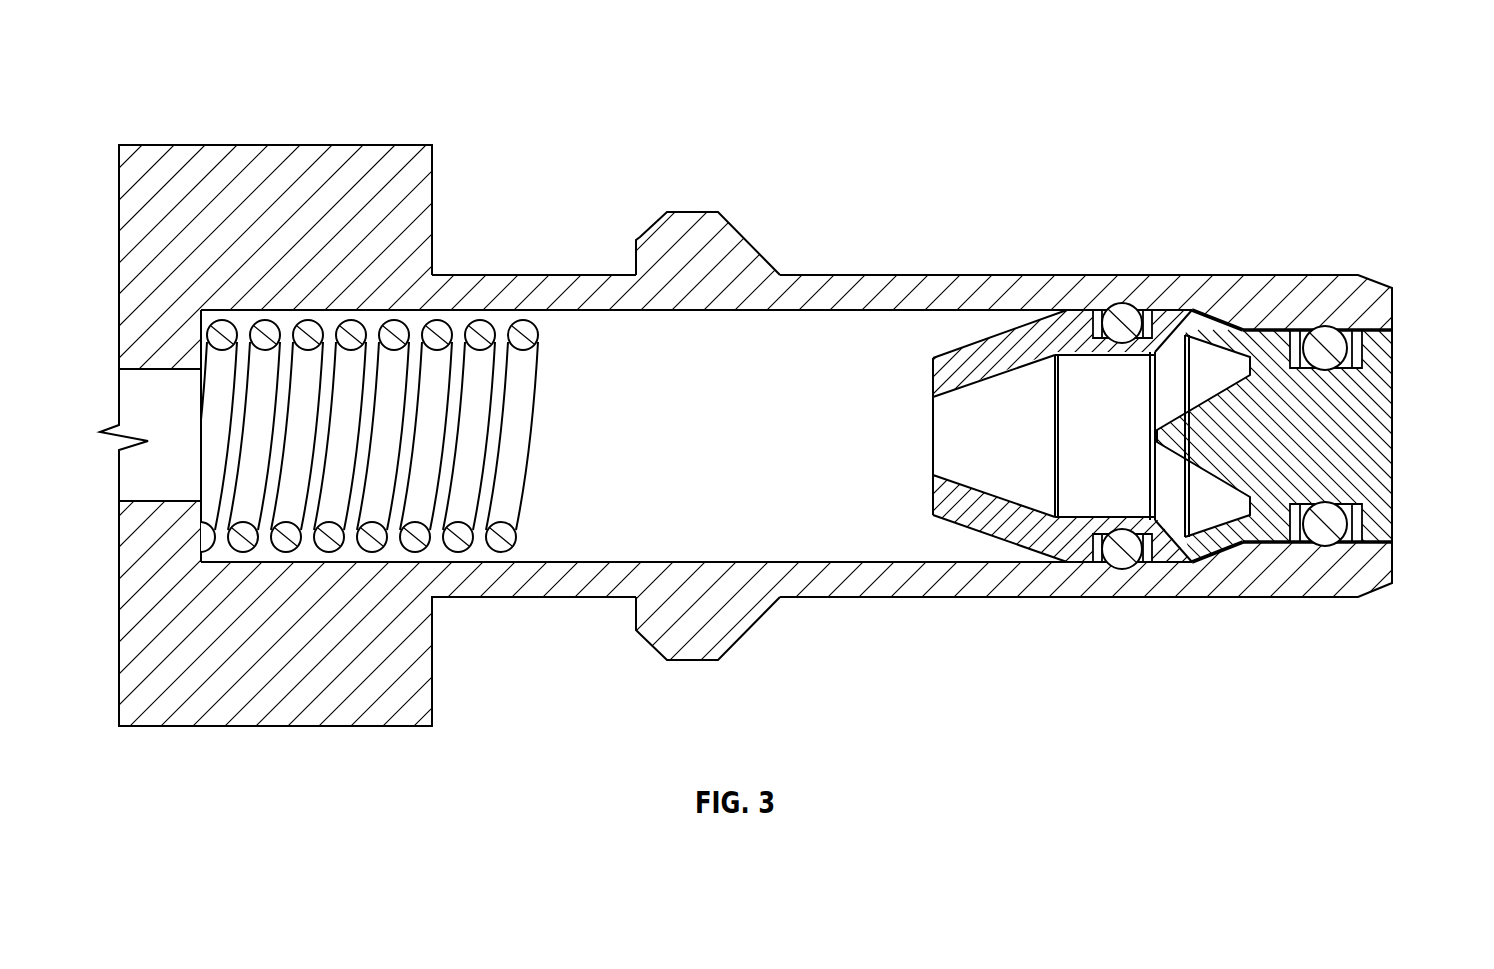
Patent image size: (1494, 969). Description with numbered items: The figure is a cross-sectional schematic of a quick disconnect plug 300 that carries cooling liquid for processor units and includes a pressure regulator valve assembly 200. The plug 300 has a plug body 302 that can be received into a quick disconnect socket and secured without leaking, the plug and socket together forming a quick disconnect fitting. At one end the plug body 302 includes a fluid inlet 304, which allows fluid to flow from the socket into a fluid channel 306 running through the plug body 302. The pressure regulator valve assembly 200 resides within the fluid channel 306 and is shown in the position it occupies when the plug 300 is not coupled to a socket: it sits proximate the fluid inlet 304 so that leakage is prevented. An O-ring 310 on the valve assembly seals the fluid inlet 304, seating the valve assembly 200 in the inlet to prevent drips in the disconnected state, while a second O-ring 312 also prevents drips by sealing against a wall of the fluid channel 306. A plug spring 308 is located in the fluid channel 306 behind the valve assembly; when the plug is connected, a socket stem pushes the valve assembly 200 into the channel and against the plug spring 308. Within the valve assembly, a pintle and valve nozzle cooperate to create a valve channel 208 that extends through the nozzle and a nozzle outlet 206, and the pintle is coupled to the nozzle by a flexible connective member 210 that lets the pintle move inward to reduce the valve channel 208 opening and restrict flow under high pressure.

The quick disconnect plug 300 is at (235, 65).
The plug body 302 is at (892, 300).
The fluid inlet 304 is at (1416, 453).
The fluid channel 306 is at (710, 342).
The plug spring 308 is at (282, 545).
The O-ring 310 is at (1327, 340).
The O-ring 312 is at (1125, 318).
The nozzle outlet 206 is at (918, 435).
The valve channel 208 is at (1227, 362).
The connective member 210 is at (1233, 540).
The pressure regulator valve assembly 200 is at (1372, 548).